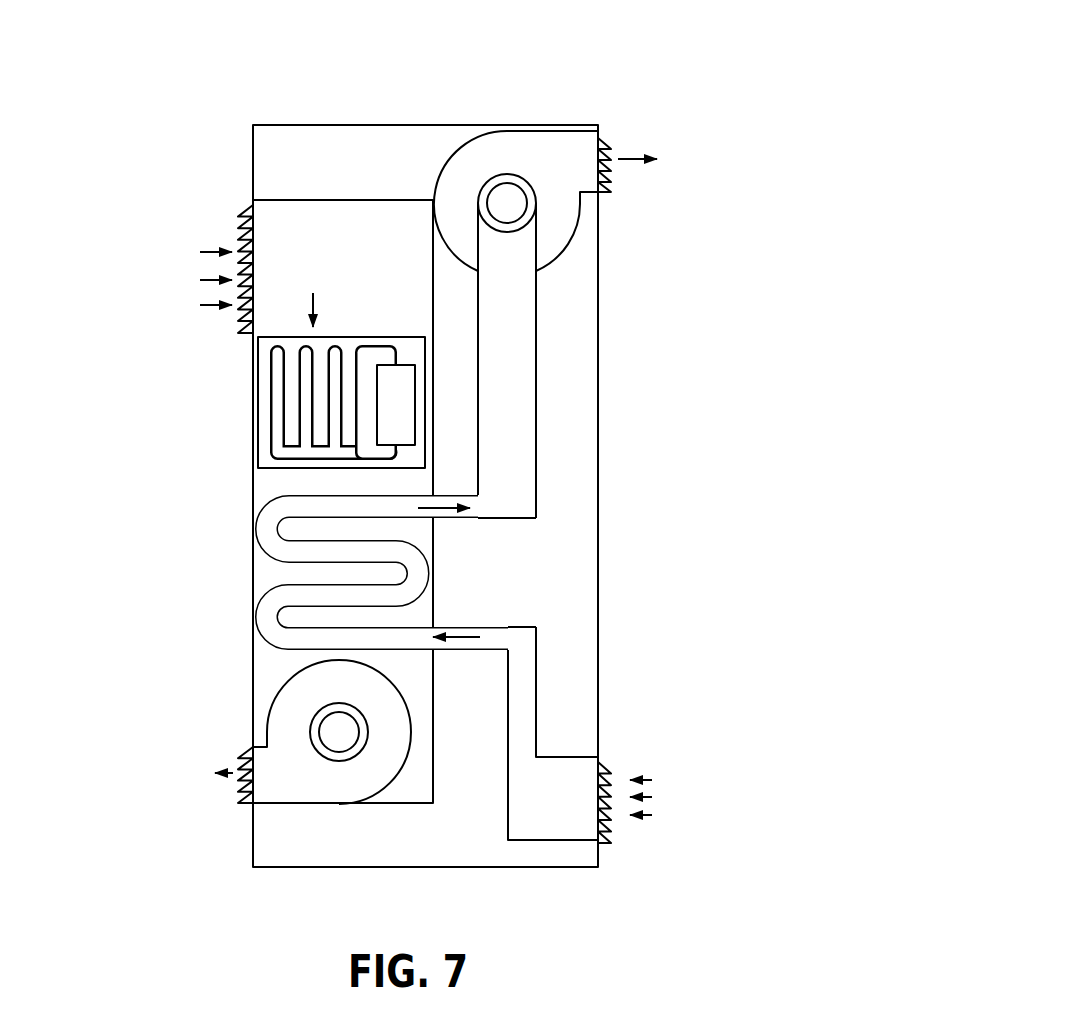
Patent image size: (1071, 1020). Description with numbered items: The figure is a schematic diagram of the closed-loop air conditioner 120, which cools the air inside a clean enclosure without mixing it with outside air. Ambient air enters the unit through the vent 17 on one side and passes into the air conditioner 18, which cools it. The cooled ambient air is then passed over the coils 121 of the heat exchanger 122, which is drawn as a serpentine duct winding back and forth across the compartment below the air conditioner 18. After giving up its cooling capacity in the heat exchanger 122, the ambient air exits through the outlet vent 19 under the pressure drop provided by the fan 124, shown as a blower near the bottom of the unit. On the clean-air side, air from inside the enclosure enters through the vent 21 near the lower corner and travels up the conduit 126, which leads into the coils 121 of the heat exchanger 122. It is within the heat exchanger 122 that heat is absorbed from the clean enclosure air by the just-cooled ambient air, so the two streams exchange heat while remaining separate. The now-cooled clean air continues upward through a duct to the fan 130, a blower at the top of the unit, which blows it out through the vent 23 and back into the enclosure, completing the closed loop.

The closed-loop air conditioner 120 is at (592, 83).
The vent 17 is at (238, 228).
The air conditioner 18 is at (258, 413).
The outlet vent 19 is at (235, 783).
The vent 21 is at (602, 765).
The vent 23 is at (603, 138).
The coils 121 is at (262, 540).
The heat exchanger 122 is at (242, 580).
The fan 124 is at (278, 690).
The conduit 126 is at (537, 728).
The fan 130 is at (455, 158).